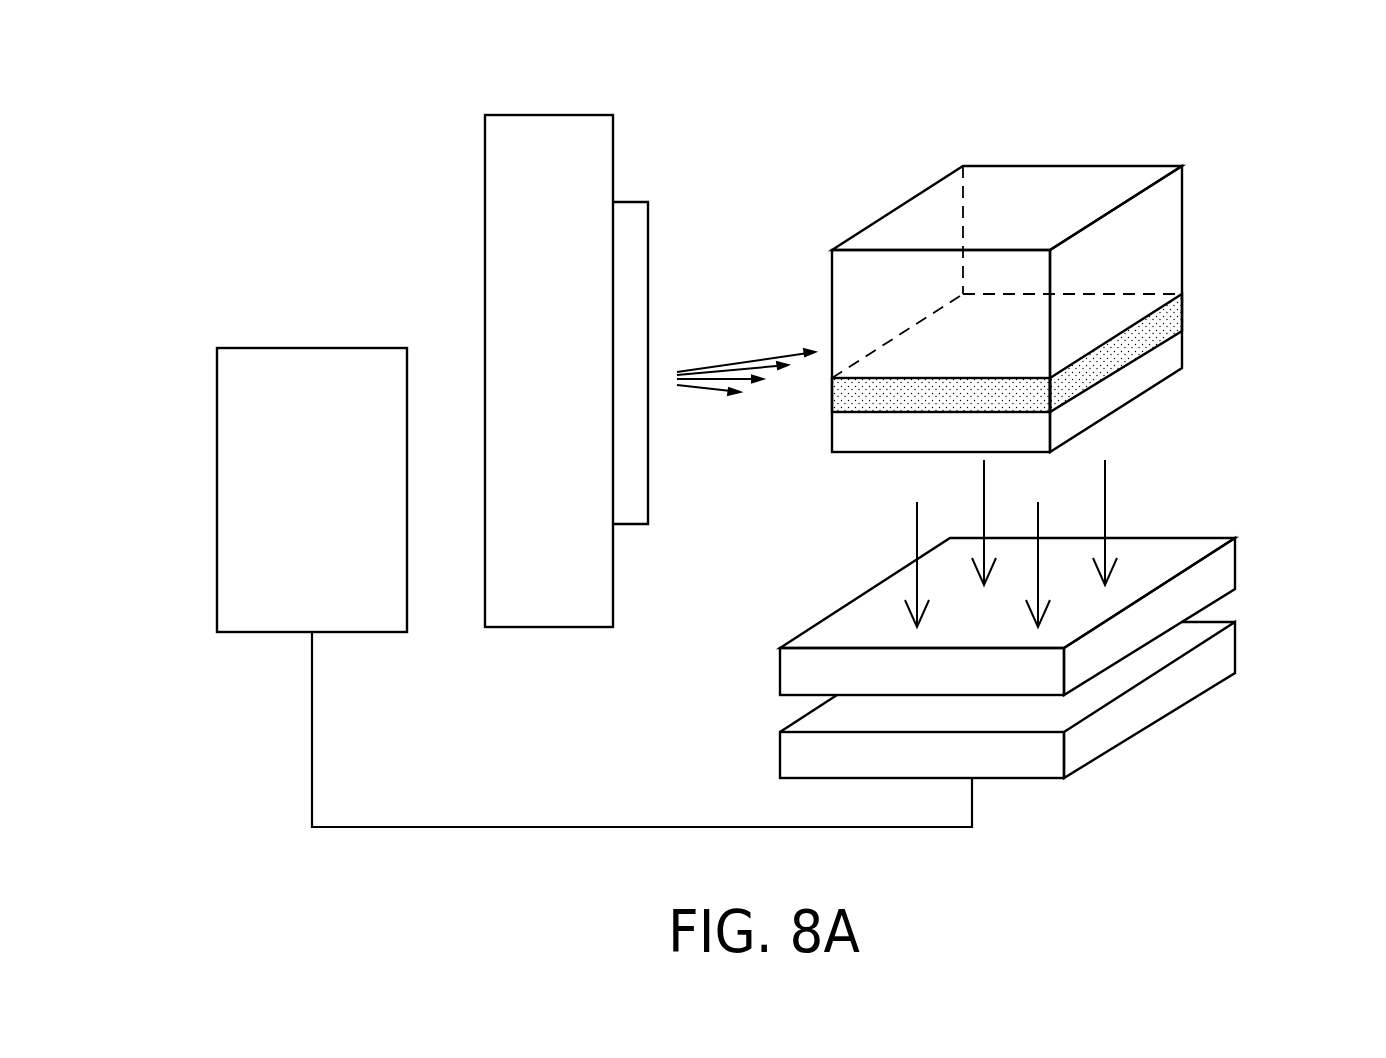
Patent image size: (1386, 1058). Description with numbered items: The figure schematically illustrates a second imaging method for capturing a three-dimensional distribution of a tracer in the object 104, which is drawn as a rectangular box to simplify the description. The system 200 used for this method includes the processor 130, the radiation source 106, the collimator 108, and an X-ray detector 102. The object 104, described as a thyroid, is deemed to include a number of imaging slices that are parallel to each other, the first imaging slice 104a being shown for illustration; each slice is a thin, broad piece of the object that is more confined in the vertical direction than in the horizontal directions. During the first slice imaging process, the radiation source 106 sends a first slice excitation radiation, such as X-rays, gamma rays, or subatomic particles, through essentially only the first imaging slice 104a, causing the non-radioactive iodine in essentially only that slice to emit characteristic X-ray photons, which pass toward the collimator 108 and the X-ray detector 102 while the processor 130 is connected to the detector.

The system 200 is at (368, 215).
The processor 130 is at (343, 504).
The radiation source 106 is at (585, 387).
The object 104 is at (890, 212).
The first imaging slice 104a is at (1173, 320).
The collimator 108 is at (943, 684).
The X-ray detector 102 is at (946, 769).